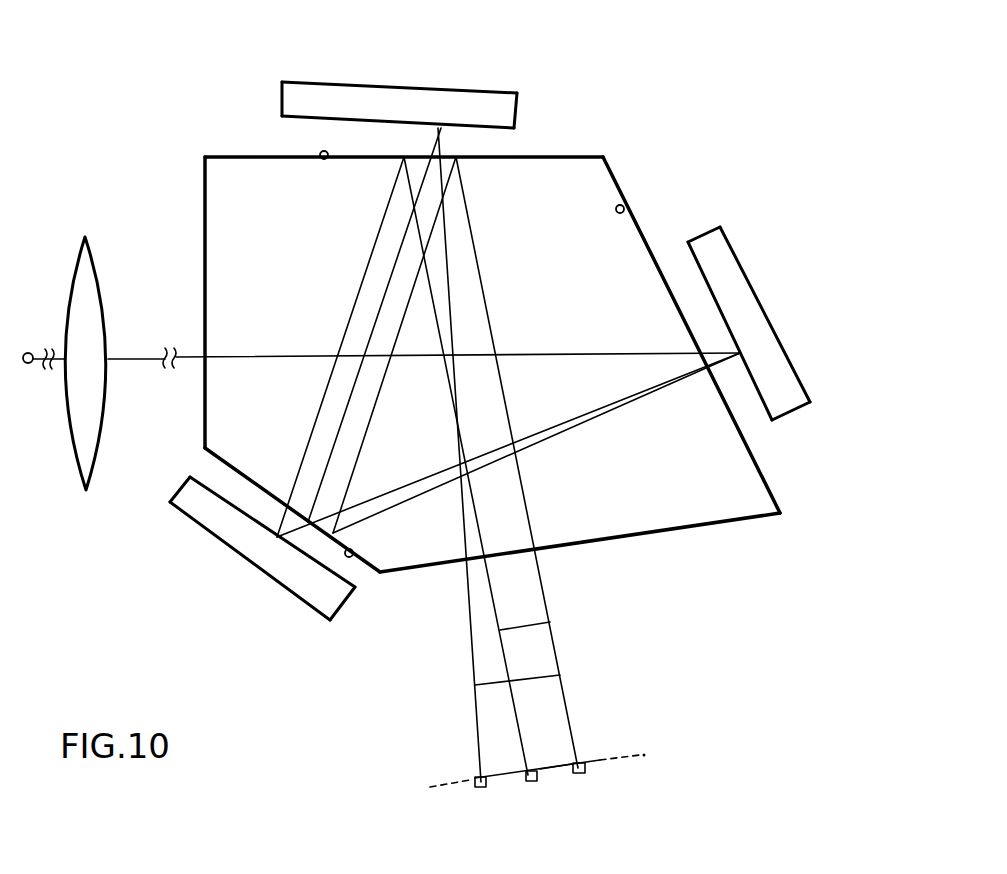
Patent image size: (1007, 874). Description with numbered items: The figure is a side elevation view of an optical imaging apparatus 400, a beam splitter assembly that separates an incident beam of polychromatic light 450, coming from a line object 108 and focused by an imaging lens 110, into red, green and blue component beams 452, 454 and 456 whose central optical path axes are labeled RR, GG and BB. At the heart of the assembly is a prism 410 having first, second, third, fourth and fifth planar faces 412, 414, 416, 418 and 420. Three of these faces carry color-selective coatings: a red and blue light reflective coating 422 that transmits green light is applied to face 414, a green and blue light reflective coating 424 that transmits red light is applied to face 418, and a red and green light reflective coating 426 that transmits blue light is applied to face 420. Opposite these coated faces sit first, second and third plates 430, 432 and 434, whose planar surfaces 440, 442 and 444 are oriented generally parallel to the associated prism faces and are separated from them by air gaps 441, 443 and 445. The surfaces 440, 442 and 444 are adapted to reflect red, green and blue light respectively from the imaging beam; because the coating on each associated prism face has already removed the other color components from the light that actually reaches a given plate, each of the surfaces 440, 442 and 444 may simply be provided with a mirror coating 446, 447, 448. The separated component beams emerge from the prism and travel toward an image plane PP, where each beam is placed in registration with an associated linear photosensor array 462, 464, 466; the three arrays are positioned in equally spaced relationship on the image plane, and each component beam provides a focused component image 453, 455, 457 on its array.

The optical imaging apparatus 400 is at (162, 97).
The line object 108 is at (32, 351).
The imaging lens 110 is at (78, 253).
The prism 410 is at (203, 211).
The first planar face 412 is at (202, 400).
The second planar face 414 is at (213, 457).
The third planar face 416 is at (730, 525).
The fourth planar face 418 is at (762, 472).
The fifth planar face 420 is at (550, 156).
The red and blue light reflective coating 422 is at (355, 553).
The green and blue light reflective coating 424 is at (623, 205).
The red and green light reflective coating 426 is at (322, 160).
The first plate 430 is at (781, 322).
The second plate 432 is at (269, 574).
The third plate 434 is at (376, 86).
The planar surface 440 is at (768, 415).
The air gap 441 is at (747, 412).
The planar surface 442 is at (348, 597).
The air gap 443 is at (210, 480).
The planar surface 444 is at (290, 119).
The air gap 445 is at (313, 135).
The mirror coating 446 is at (690, 256).
The mirror coating 447 is at (348, 578).
The mirror coating 448 is at (499, 124).
The polychromatic light beam 450 is at (192, 355).
The red component beam 452 is at (543, 575).
The focused component image 453 is at (590, 765).
The green component beam 454 is at (550, 622).
The focused component image 455 is at (552, 768).
The blue component beam 456 is at (560, 675).
The focused component image 457 is at (465, 775).
The linear photosensor array 462 is at (586, 775).
The linear photosensor array 464 is at (528, 782).
The linear photosensor array 466 is at (477, 790).